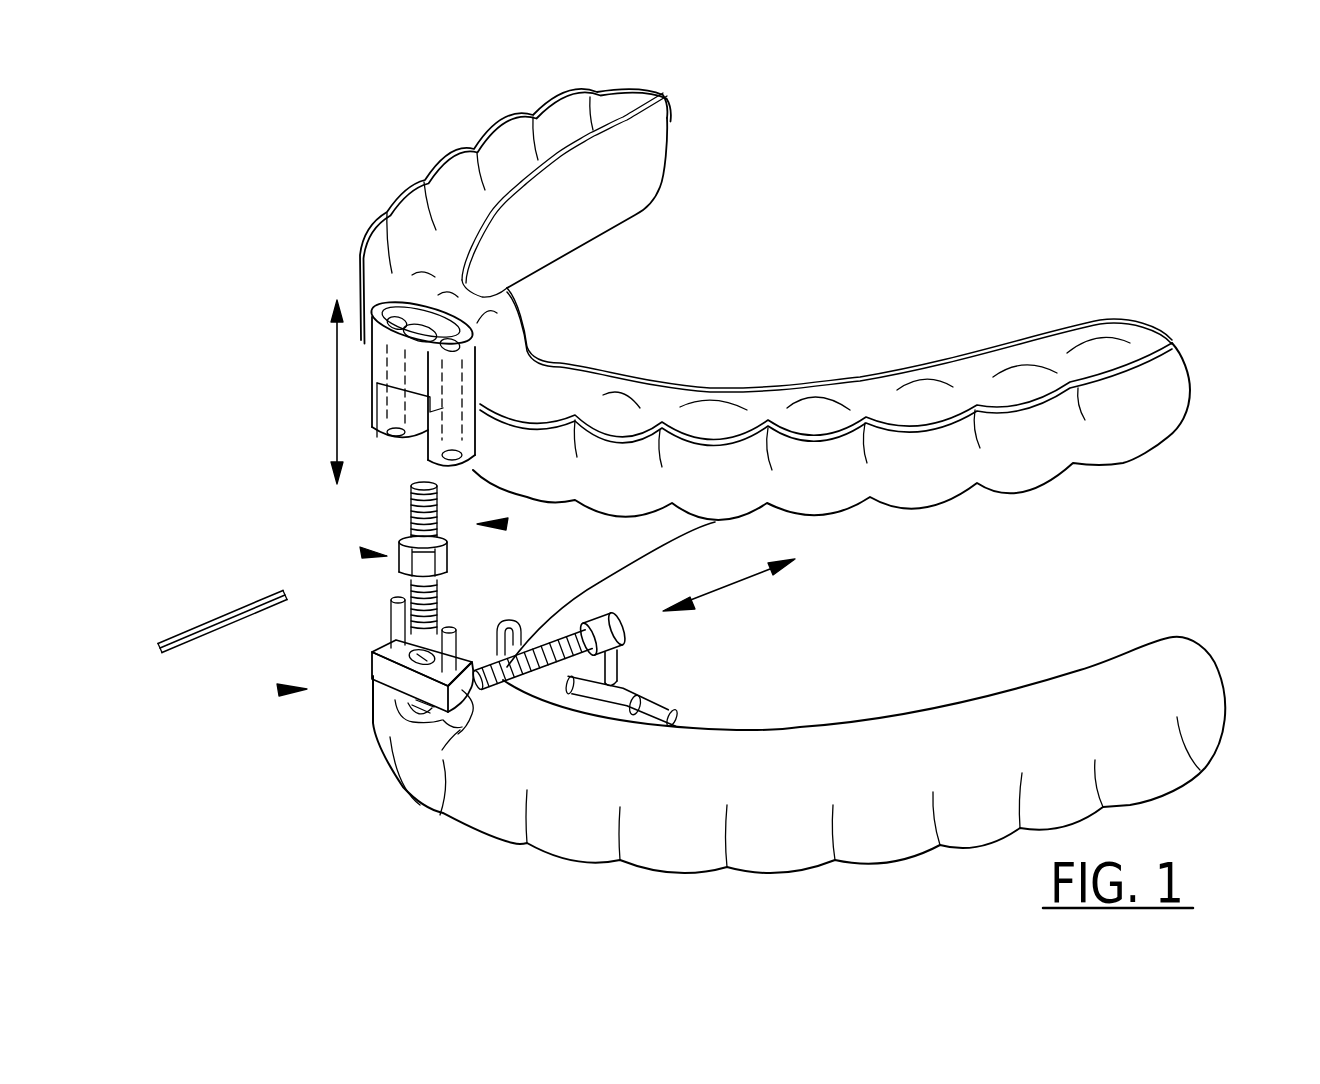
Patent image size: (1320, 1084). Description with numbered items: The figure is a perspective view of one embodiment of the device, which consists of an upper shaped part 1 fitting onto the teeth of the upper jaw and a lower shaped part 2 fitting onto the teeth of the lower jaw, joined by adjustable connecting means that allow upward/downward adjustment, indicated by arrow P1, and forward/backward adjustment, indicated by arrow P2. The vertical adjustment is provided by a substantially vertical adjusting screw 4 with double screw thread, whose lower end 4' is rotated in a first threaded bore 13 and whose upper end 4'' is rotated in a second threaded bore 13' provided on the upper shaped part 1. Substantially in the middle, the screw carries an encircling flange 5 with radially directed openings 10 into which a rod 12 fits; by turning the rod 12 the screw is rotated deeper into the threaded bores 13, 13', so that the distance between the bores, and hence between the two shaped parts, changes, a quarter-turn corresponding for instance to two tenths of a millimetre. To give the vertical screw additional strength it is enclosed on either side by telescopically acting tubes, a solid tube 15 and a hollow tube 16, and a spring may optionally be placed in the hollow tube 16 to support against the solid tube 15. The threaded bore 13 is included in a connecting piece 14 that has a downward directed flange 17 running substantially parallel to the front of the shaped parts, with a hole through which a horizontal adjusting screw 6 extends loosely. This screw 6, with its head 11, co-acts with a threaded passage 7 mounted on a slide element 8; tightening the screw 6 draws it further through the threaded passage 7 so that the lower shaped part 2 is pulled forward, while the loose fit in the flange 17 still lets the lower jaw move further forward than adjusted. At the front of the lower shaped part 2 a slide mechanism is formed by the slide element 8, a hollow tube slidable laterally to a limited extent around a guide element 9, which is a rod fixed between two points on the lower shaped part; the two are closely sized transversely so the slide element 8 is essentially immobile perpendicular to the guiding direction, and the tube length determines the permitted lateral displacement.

The upper shaped part 1 is at (1170, 330).
The lower shaped part 2 is at (1210, 660).
The vertical adjusting screw 4 is at (541, 586).
The lower end of vertical adjusting screw 4' is at (469, 604).
The upper end of vertical adjusting screw 4'' is at (372, 402).
The encircling flange 5 is at (365, 552).
The horizontal adjusting screw 6 is at (572, 632).
The threaded passage 7 is at (620, 633).
The slide element 8 is at (622, 670).
The guide element 9 is at (660, 717).
The radially directed openings 10 is at (447, 560).
The head of horizontal adjusting screw 11 is at (407, 712).
The rod 12 is at (207, 622).
The first threaded bore 13 is at (385, 673).
The second threaded bore 13' is at (505, 275).
The connecting piece 14 is at (282, 690).
The solid tube 15 is at (395, 623).
The hollow tube 16 is at (398, 330).
The downward directed flange 17 is at (443, 760).
The upward/downward adjustment direction P1 is at (337, 378).
The forward/backward adjustment direction P2 is at (745, 583).